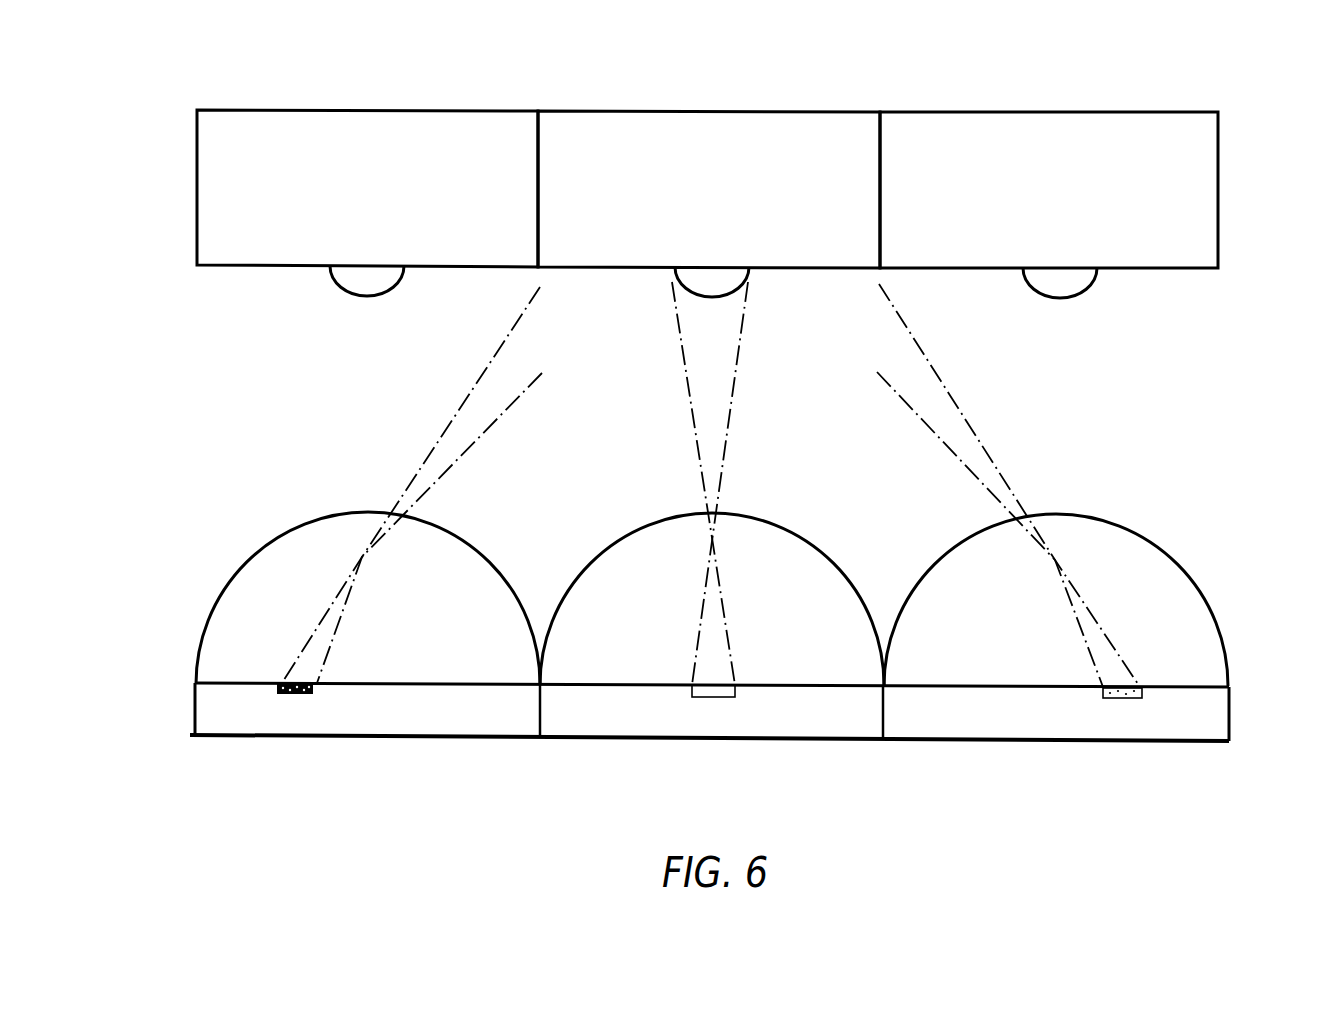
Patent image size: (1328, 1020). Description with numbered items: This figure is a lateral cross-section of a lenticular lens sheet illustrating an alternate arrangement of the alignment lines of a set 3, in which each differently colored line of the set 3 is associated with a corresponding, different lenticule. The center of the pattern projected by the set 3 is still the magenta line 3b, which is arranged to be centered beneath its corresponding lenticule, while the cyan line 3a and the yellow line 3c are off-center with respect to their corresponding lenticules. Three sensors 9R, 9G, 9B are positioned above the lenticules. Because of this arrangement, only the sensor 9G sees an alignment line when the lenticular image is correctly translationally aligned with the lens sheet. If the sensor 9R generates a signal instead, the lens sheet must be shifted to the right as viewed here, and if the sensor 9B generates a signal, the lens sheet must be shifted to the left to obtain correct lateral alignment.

The sensor 9R is at (473, 110).
The sensor 9G is at (810, 112).
The sensor 9B is at (1130, 112).
The set of alignment lines 3 is at (1230, 712).
The cyan line 3a is at (292, 696).
The magenta line 3b is at (705, 698).
The yellow line 3c is at (1118, 700).